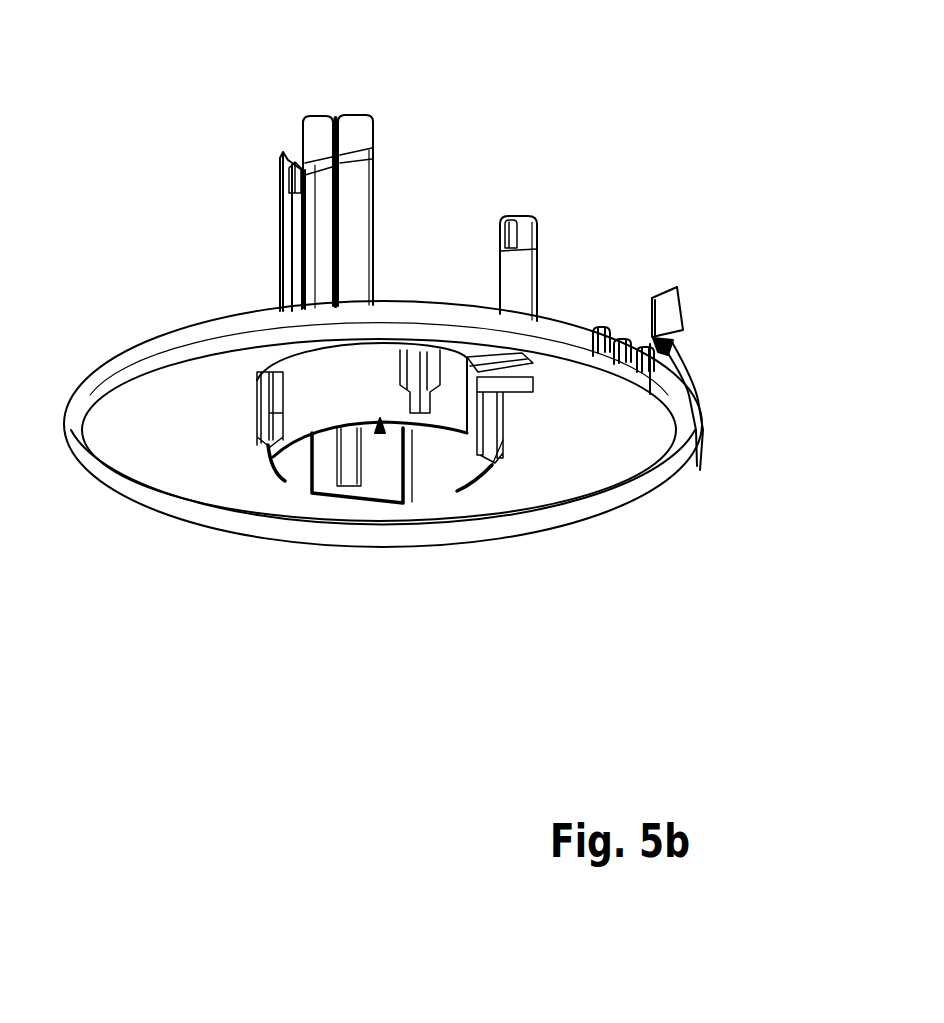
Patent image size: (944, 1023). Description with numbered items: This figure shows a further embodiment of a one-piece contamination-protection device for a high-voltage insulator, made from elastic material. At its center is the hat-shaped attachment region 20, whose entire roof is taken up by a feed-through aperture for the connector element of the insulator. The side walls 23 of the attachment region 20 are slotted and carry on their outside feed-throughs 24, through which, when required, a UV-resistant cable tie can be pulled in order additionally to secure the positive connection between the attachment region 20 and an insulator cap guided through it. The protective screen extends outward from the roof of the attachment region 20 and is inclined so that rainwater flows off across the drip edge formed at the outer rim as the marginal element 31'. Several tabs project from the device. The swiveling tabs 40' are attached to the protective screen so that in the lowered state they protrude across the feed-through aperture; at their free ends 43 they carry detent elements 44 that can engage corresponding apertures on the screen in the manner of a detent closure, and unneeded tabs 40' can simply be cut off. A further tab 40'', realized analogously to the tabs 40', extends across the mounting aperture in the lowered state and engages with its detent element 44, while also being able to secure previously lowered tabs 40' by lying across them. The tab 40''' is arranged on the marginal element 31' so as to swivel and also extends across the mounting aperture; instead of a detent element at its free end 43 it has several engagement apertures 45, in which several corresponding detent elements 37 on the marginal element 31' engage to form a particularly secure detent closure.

The attachment region 20 is at (380, 432).
The side walls 23 is at (303, 430).
The feed-throughs 24 is at (268, 443).
The marginal element 31' is at (383, 378).
The detent elements 37 is at (633, 378).
The tabs 40' is at (254, 231).
The tab 40'' is at (467, 268).
The tab 40''' is at (749, 401).
The free ends 43 is at (363, 126).
The detent elements 44 is at (516, 216).
The engagement apertures 45 is at (663, 367).